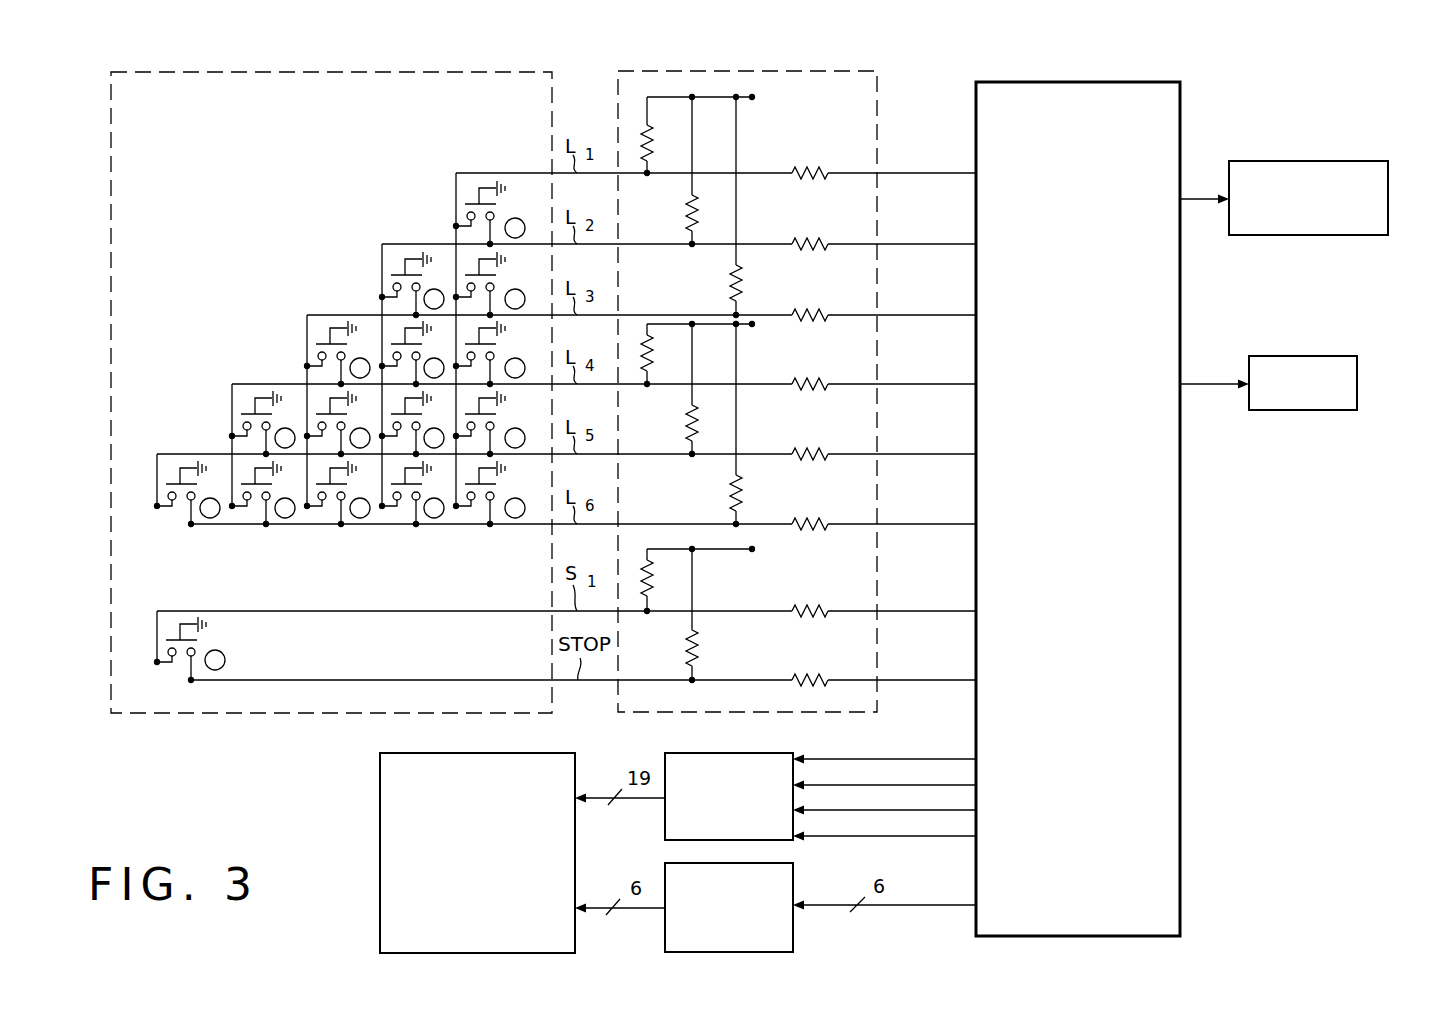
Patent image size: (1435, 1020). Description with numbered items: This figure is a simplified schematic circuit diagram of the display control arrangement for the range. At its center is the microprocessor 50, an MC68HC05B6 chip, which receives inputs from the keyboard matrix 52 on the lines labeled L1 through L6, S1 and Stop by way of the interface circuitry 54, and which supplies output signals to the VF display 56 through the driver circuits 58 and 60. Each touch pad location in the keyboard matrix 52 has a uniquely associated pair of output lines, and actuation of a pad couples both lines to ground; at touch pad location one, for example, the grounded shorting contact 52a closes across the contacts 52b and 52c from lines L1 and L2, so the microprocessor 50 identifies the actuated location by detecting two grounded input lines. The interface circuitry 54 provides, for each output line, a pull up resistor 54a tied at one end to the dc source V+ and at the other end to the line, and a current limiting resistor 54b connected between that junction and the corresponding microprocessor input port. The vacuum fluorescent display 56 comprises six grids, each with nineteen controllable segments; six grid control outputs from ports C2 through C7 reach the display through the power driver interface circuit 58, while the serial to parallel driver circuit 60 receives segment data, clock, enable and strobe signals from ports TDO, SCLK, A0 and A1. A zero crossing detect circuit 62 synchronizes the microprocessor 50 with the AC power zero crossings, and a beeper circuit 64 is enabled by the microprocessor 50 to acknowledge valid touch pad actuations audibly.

The microprocessor 50 is at (1148, 82).
The keyboard matrix 52 is at (111, 322).
The grounded shorting contact 52a is at (471, 204).
The contact 52b is at (467, 216).
The contact 52c is at (494, 213).
The interface circuitry 54 is at (877, 145).
The pull up resistor 54a is at (647, 145).
The current limiting resistor 54b is at (808, 174).
The VF display 56 is at (380, 867).
The power driver interface circuit 58 is at (793, 886).
The driver circuit 60 is at (665, 820).
The zero crossing detect circuit 62 is at (1306, 161).
The beeper circuit 64 is at (1308, 356).